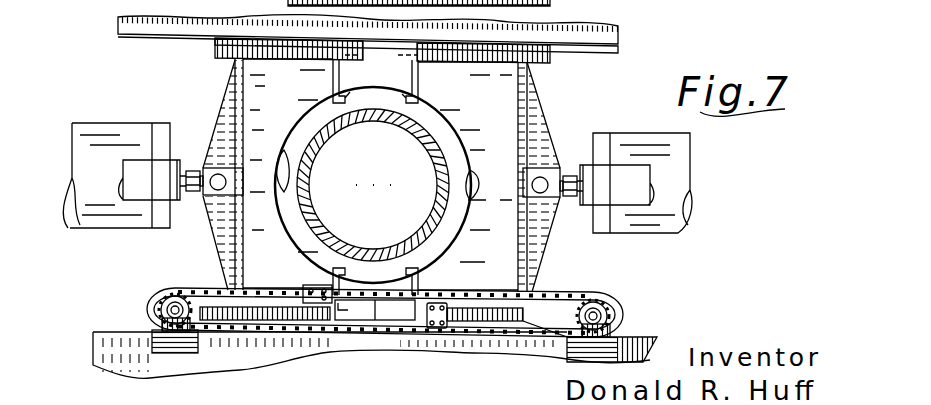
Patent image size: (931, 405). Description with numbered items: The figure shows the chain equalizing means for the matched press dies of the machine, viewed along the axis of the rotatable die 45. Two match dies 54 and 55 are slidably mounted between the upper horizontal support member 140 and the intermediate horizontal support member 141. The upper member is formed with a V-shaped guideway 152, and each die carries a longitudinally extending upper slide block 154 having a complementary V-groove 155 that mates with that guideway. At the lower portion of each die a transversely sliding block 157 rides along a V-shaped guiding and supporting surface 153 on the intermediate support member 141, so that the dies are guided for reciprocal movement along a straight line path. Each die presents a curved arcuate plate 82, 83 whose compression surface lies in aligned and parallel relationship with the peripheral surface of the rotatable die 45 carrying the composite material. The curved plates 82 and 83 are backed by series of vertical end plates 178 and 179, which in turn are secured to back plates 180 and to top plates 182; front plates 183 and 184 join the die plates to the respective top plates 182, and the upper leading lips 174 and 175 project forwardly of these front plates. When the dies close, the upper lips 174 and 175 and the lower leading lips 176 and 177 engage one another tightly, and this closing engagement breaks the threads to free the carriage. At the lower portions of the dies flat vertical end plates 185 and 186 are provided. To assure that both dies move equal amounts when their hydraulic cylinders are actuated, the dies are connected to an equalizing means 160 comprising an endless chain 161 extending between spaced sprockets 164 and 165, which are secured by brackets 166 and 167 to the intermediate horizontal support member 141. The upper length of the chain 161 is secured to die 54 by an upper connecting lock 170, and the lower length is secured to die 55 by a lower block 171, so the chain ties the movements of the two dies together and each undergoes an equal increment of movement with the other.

The upper horizontal support member 140 is at (590, 26).
The V-shaped guideway 152 is at (603, 50).
The upper slide block 154 is at (216, 57).
The V-groove 155 is at (381, 54).
The top plates 182 is at (256, 60).
The front plate 183 is at (342, 80).
The front plate 184 is at (413, 70).
The upper leading lip 174 is at (350, 98).
The upper leading lip 175 is at (408, 98).
The match die 54 is at (268, 109).
The match die 55 is at (503, 123).
The back plates 180 is at (243, 120).
The rotatable die 45 is at (355, 164).
The curved arcuate plate 83 is at (284, 192).
The curved arcuate plate 82 is at (470, 200).
The vertical end plates 178 is at (252, 257).
The vertical end plates 179 is at (472, 251).
The lower leading lip 176 is at (346, 270).
The lower leading lip 177 is at (411, 278).
The transversely sliding block 157 is at (250, 308).
The sprocket 164 is at (157, 287).
The sprocket 165 is at (612, 296).
The upper connecting lock 170 is at (322, 288).
The lower block 171 is at (440, 302).
The equalizing means 160 is at (380, 346).
The endless chain 161 is at (478, 330).
The flat vertical end plate 185 is at (375, 309).
The flat vertical end plate 186 is at (395, 309).
The bracket 166 is at (170, 352).
The V-shaped guiding and supporting surface 153 is at (637, 335).
The bracket 167 is at (553, 356).
The intermediate horizontal support member 141 is at (130, 355).